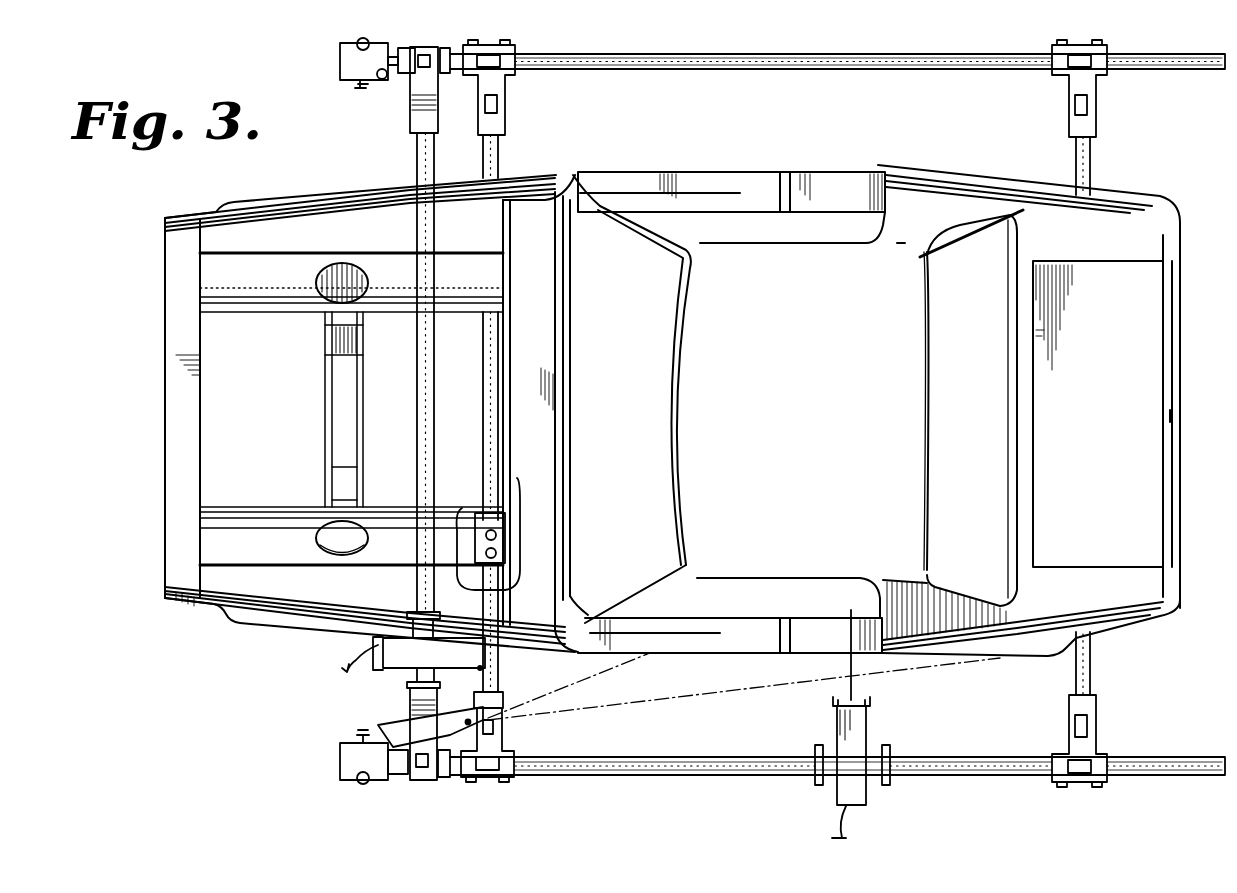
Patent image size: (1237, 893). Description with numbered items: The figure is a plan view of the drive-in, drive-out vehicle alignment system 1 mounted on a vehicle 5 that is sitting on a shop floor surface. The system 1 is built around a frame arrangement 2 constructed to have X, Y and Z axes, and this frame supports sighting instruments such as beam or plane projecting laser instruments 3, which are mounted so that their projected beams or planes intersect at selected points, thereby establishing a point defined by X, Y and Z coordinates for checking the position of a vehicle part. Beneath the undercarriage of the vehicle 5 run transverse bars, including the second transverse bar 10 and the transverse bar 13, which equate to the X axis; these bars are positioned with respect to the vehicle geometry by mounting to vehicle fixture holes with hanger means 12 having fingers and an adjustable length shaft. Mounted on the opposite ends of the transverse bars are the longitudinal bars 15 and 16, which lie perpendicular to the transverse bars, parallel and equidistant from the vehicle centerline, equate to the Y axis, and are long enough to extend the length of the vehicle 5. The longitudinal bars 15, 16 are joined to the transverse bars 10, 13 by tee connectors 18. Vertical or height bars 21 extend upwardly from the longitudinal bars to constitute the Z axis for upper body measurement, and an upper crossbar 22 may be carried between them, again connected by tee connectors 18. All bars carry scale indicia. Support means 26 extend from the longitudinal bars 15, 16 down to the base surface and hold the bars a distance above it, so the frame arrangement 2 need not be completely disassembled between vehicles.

The drive-in, drive-out vehicle alignment system 1 is at (644, 836).
The frame arrangement 2 is at (945, 54).
The laser instruments 3 is at (472, 632).
The vehicle 5 is at (1163, 484).
The second transverse bar 10 is at (499, 156).
The hanger means 12 is at (480, 518).
The transverse bar 13 is at (1092, 172).
The longitudinal bar 15 is at (718, 775).
The longitudinal bar 16 is at (784, 54).
The tee connectors 18 is at (1097, 105).
The vertical bars 21 is at (410, 47).
The upper crossbar 22 is at (416, 160).
The support means 26 is at (350, 782).